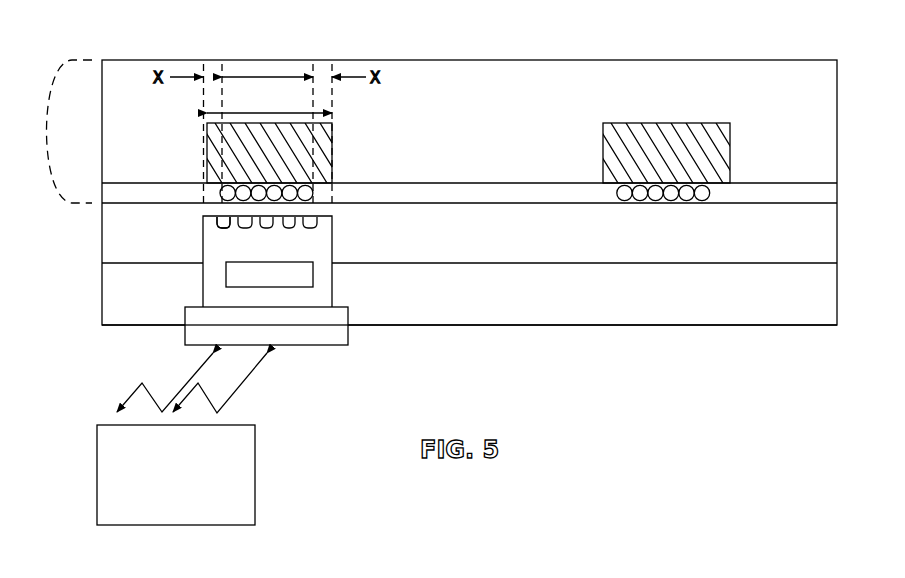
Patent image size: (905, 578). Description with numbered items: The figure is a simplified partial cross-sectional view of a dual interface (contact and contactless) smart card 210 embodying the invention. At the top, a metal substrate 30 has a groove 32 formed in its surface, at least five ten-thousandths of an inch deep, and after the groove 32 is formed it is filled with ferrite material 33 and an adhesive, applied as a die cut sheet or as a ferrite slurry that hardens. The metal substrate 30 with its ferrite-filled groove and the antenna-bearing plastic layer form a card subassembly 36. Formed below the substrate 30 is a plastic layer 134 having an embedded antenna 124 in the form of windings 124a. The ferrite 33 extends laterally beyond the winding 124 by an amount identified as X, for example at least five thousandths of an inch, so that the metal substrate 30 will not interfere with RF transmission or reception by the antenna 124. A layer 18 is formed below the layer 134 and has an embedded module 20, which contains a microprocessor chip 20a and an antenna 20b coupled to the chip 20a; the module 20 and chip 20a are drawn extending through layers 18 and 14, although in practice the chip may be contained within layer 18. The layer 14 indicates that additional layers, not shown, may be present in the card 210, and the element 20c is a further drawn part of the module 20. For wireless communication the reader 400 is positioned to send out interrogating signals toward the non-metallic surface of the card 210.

The dual interface smart card 210 is at (833, 48).
The card subassembly 36 is at (44, 128).
The ferrite material 33 is at (333, 124).
The groove 32 is at (690, 122).
The antenna 124 is at (318, 195).
The windings 124a is at (215, 195).
The metal substrate 30 is at (837, 142).
The plastic layer 134 is at (837, 188).
The layer 18 is at (837, 250).
The layer 14 is at (837, 300).
The module 20 is at (278, 251).
The microprocessor chip 20a is at (307, 268).
The antenna 20b is at (228, 228).
The interface 20c is at (332, 330).
The reader 400 is at (242, 465).